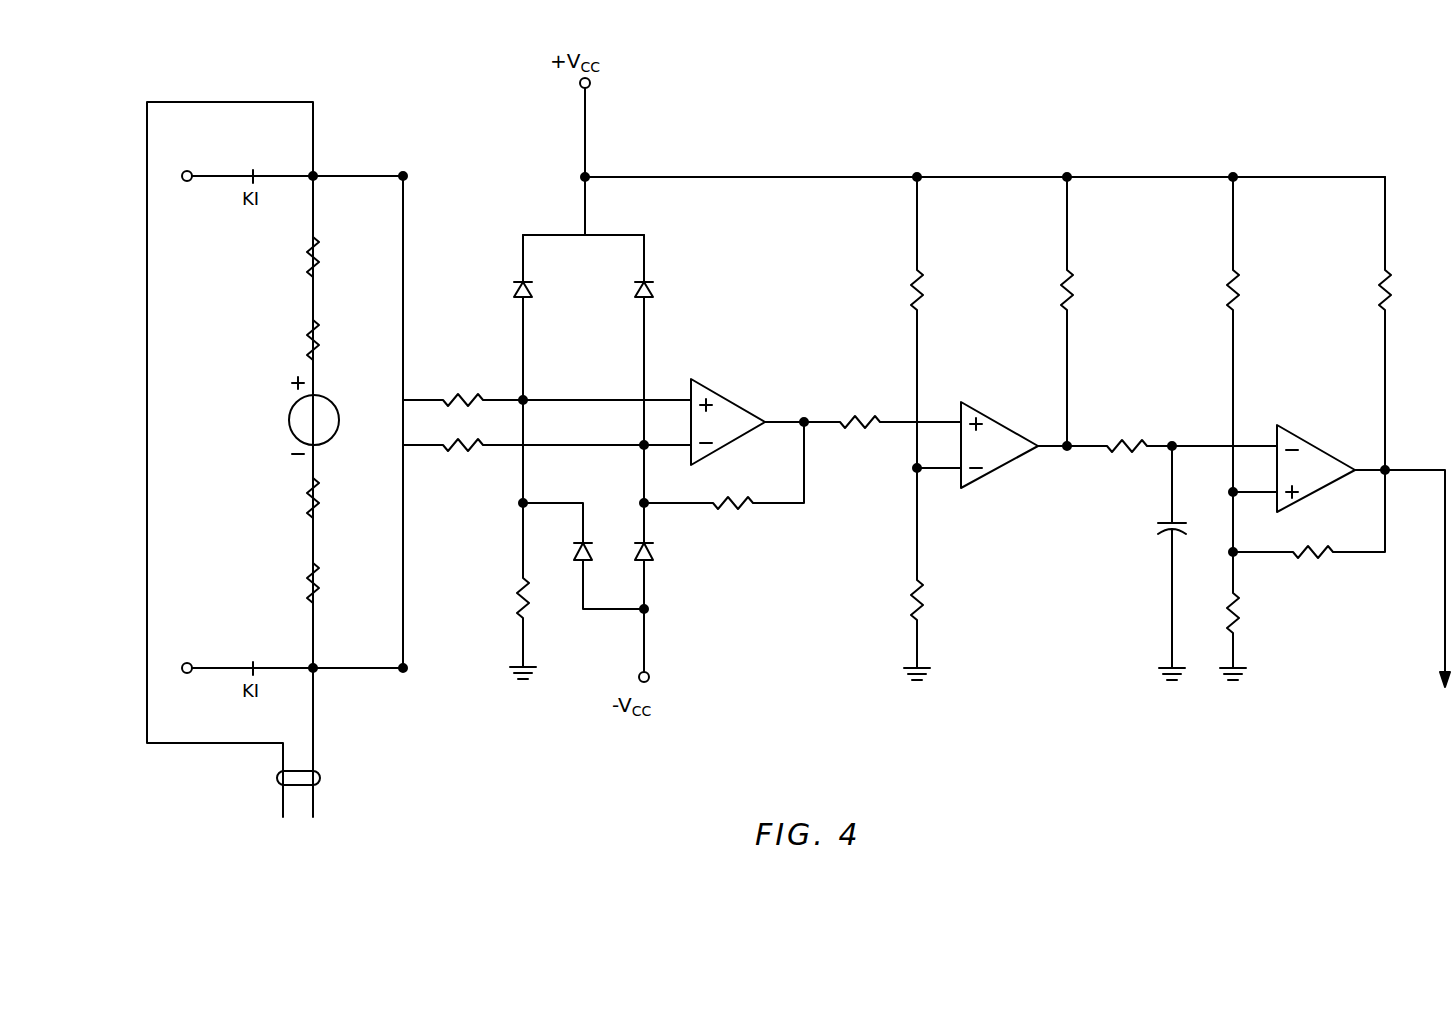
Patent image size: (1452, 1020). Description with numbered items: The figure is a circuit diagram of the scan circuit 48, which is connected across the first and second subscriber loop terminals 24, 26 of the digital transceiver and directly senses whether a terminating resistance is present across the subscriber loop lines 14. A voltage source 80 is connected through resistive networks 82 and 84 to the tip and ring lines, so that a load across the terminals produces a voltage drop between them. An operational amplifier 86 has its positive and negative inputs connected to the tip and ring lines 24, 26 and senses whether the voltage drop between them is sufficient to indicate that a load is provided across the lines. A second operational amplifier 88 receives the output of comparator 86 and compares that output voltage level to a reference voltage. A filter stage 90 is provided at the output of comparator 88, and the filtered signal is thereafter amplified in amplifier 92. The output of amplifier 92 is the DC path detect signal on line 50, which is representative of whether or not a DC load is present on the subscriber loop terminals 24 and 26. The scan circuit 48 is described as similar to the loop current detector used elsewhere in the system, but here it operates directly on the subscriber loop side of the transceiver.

The subscriber loop lines 14 is at (321, 778).
The first subscriber loop terminal 24 is at (195, 171).
The second subscriber loop terminal 26 is at (192, 661).
The scan circuit 48 is at (1058, 593).
The line 50 is at (1445, 615).
The voltage source 80 is at (289, 416).
The resistive network 82 is at (372, 306).
The resistive network 84 is at (372, 556).
The operational amplifier 86 is at (720, 392).
The operational amplifier 88 is at (995, 417).
The filter stage 90 is at (1138, 498).
The amplifier 92 is at (1312, 444).